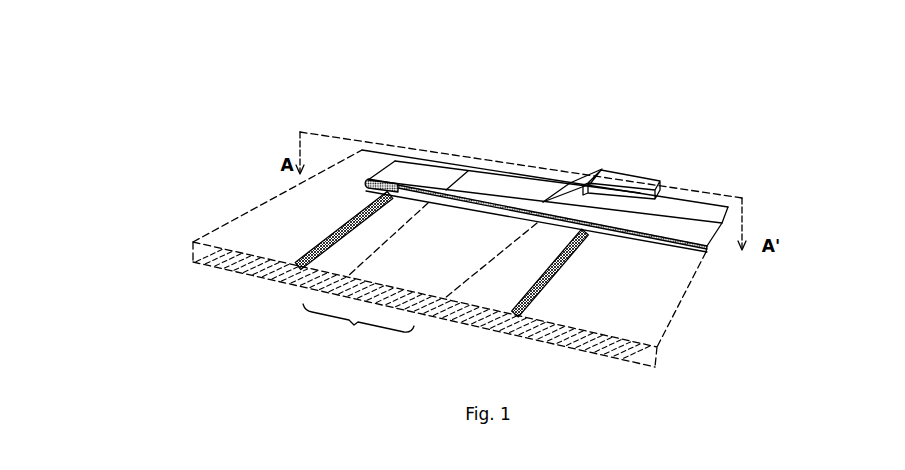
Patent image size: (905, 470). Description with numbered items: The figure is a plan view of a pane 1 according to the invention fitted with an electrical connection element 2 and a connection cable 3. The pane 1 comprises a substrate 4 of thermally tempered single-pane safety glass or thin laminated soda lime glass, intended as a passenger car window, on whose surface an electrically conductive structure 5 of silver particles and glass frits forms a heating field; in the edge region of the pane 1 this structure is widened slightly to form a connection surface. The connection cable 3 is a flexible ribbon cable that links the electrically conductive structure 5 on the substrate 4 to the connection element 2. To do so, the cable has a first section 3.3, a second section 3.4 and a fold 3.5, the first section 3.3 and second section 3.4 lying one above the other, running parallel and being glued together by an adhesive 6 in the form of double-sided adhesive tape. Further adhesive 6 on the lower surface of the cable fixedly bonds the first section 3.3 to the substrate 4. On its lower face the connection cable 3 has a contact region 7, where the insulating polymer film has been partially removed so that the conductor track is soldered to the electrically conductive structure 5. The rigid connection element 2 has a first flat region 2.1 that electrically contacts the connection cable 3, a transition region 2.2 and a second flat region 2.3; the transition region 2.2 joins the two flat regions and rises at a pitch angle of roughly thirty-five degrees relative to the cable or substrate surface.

The pane 1 is at (522, 105).
The connection element 2 is at (583, 152).
The first flat region 2.1 is at (513, 185).
The transition region 2.2 is at (575, 178).
The second flat region 2.3 is at (627, 172).
The connection cable 3 is at (560, 169).
The first section 3.3 is at (640, 217).
The second section 3.4 is at (422, 175).
The fold 3.5 is at (371, 178).
The substrate 4 is at (691, 292).
The electrically conductive structure 5 is at (320, 238).
The adhesive 6 is at (365, 183).
The contact region 7 is at (358, 306).